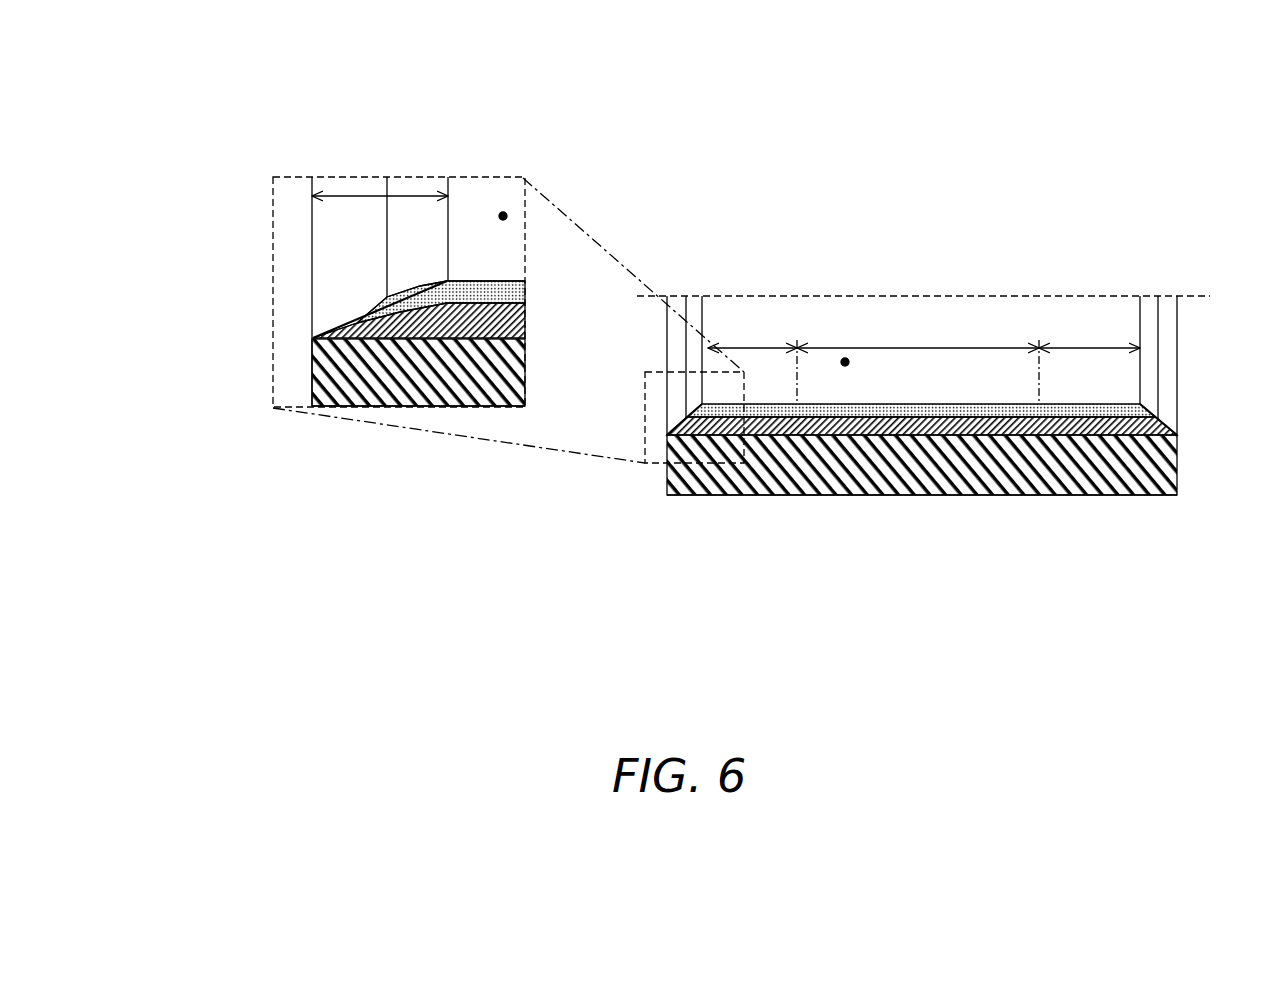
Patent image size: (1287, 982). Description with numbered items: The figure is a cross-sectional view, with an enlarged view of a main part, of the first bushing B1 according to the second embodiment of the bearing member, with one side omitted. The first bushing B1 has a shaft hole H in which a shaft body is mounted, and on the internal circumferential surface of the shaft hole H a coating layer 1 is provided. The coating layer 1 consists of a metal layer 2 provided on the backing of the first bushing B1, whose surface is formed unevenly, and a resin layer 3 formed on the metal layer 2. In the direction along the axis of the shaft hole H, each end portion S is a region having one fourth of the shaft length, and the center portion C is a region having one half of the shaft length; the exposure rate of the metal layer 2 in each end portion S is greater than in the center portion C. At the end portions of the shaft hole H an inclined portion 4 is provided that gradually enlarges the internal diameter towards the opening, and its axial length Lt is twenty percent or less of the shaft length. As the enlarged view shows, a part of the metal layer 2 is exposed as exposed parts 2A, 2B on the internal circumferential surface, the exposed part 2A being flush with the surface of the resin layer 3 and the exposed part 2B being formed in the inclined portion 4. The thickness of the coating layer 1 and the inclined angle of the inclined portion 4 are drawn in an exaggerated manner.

The coating layer 1 is at (667, 286).
The metal layer 2 is at (670, 281).
The exposed part 2A is at (417, 290).
The exposed part 2B is at (378, 287).
The resin layer 3 is at (312, 352).
The inclined portion 4 is at (355, 323).
The shaft hole H is at (503, 216).
The length in the axial direction of the inclined portion Lt is at (352, 193).
The end portion S is at (924, 358).
The center portion C is at (918, 330).
The first bushing B1 is at (445, 410).